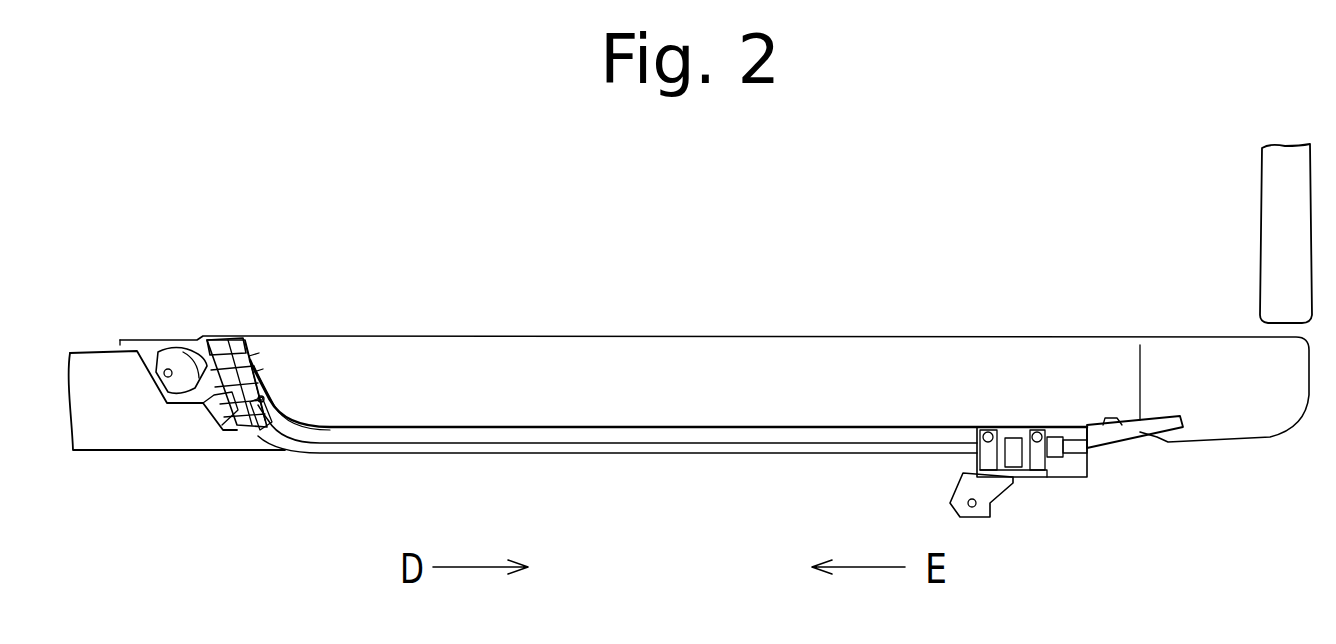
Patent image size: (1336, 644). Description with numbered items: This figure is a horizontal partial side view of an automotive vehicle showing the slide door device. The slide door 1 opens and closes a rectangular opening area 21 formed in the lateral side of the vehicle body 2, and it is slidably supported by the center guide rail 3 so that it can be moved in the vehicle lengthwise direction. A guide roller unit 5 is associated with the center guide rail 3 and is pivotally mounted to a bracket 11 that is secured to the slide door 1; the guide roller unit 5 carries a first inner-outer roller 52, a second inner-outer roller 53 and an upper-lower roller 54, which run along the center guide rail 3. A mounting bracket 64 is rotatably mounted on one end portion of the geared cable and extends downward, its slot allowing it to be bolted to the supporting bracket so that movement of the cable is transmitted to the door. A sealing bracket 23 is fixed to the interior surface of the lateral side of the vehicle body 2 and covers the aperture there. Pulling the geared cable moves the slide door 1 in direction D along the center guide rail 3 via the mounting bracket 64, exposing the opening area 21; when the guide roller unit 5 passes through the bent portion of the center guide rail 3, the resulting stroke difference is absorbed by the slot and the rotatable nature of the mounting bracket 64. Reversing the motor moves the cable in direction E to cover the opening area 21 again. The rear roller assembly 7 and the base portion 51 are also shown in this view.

The slide door 1 is at (132, 451).
The vehicle body 2 is at (740, 428).
The center guide rail 3 is at (623, 454).
The guide roller unit 5 is at (183, 330).
The rear roller bracket 7 is at (1122, 432).
The bracket 11 is at (150, 362).
The opening area 21 is at (122, 340).
The sealing bracket 23 is at (1136, 420).
The base plate 51 is at (198, 404).
The first inner-outer roller 52 is at (263, 403).
The second inner-outer roller 53 is at (232, 355).
The upper-lower roller 54 is at (253, 363).
The mounting bracket 64 is at (255, 432).